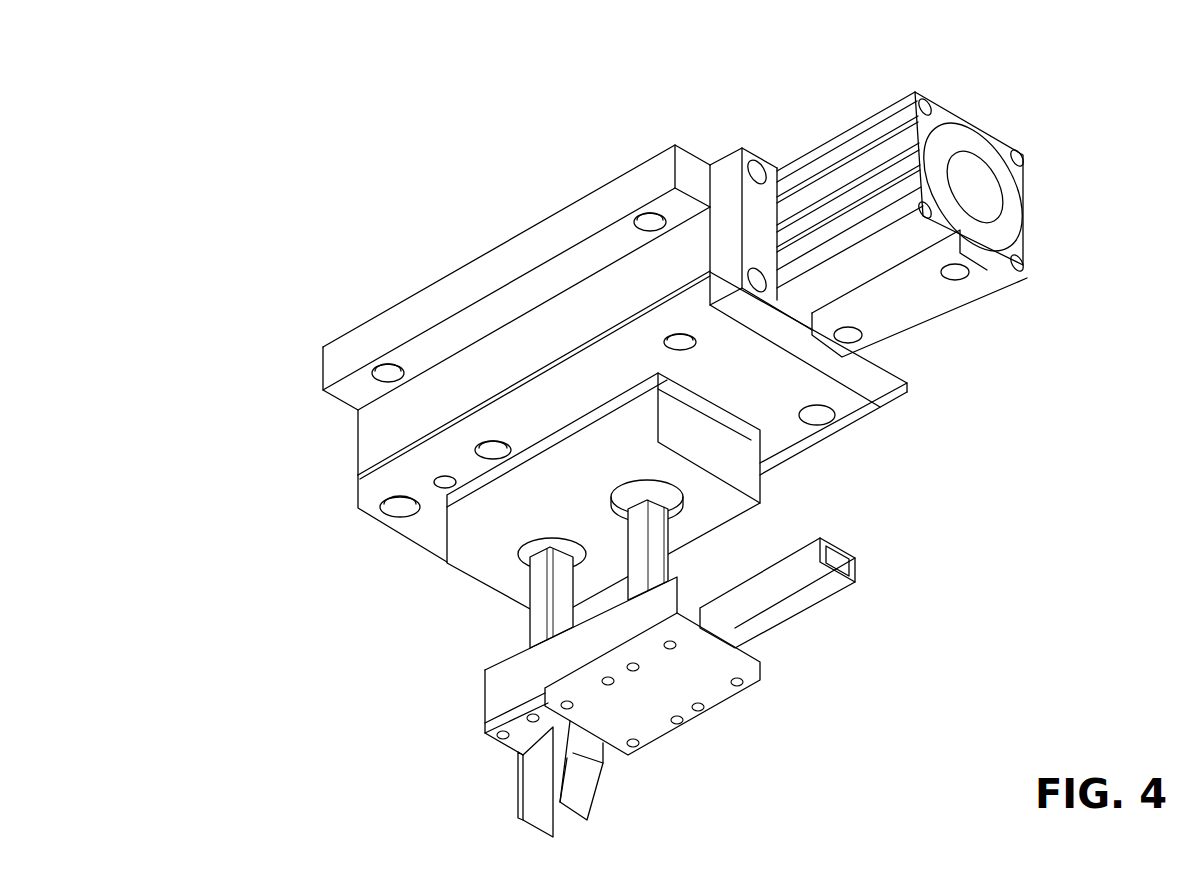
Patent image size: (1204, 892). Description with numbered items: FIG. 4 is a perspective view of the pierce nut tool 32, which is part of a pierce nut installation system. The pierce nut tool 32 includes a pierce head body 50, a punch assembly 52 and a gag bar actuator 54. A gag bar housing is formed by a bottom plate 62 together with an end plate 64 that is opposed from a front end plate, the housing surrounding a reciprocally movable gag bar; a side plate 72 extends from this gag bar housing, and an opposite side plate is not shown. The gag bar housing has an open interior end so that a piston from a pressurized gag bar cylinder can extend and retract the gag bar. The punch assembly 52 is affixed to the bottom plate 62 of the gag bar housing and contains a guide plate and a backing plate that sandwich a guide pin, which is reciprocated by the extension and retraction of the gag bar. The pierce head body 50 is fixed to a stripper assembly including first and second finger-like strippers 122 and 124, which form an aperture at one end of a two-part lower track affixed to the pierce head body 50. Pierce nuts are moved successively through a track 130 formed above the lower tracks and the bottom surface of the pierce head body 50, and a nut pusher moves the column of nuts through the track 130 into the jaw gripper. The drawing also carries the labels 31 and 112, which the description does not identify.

The guide rail 31 is at (483, 268).
The pierce nut tool 32 is at (278, 567).
The pierce head body 50 is at (478, 714).
The punch assembly 52 is at (438, 535).
The gag bar actuator 54 is at (858, 113).
The bottom plate 62 is at (850, 406).
The end plate 64 is at (725, 162).
The side plate 72 is at (372, 438).
The guide pins 112 is at (660, 570).
The first finger like stripper 122 is at (520, 795).
The second finger like stripper 124 is at (590, 787).
The track 130 is at (808, 596).